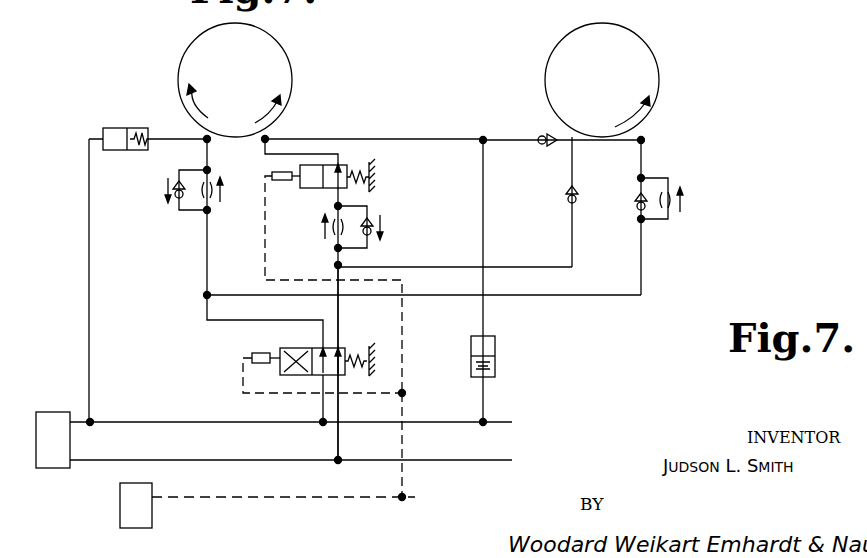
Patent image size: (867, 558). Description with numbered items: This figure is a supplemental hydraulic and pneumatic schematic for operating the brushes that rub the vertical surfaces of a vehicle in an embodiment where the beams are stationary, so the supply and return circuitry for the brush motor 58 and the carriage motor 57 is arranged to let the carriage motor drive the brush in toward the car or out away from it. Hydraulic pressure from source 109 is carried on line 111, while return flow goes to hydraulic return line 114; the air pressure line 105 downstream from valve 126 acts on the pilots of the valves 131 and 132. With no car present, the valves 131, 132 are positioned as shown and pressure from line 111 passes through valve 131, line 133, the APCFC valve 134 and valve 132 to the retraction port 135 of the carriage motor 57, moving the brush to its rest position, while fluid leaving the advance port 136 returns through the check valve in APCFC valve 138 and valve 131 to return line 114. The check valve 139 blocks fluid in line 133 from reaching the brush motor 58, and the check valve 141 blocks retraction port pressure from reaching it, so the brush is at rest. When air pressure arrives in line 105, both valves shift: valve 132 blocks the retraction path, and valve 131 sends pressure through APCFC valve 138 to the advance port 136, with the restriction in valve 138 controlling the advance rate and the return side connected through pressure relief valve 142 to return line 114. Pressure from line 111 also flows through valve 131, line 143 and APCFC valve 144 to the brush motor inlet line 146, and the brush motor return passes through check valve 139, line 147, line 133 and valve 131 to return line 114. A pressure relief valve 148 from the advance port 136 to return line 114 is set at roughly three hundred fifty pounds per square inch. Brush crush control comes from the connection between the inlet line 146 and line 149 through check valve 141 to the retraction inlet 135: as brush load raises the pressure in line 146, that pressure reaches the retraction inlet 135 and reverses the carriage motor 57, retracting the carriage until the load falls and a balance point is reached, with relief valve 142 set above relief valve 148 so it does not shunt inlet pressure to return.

The carriage motor 57 is at (273, 52).
The brush motor 58 is at (642, 62).
The air pressure line 105 is at (300, 497).
The hydraulic pressure source 109 is at (56, 412).
The hydraulic pressure line 111 is at (187, 460).
The hydraulic return line 114 is at (145, 421).
The valve 126 is at (125, 510).
The valve 131 is at (307, 345).
The valve 132 is at (352, 161).
The line 133 is at (338, 288).
The APCFC valve 134 is at (393, 231).
The retraction port 135 is at (267, 136).
The advance port 136 is at (205, 134).
The APCFC valve 138 is at (177, 218).
The check valve 139 is at (575, 201).
The check valve 141 is at (541, 135).
The pressure relief valve 142 is at (495, 365).
The line 143 is at (548, 298).
The APCFC valve 144 is at (653, 223).
The brush motor inlet line 146 is at (643, 133).
The line 147 is at (544, 265).
The pressure relief valve 148 is at (141, 128).
The line 149 is at (563, 148).